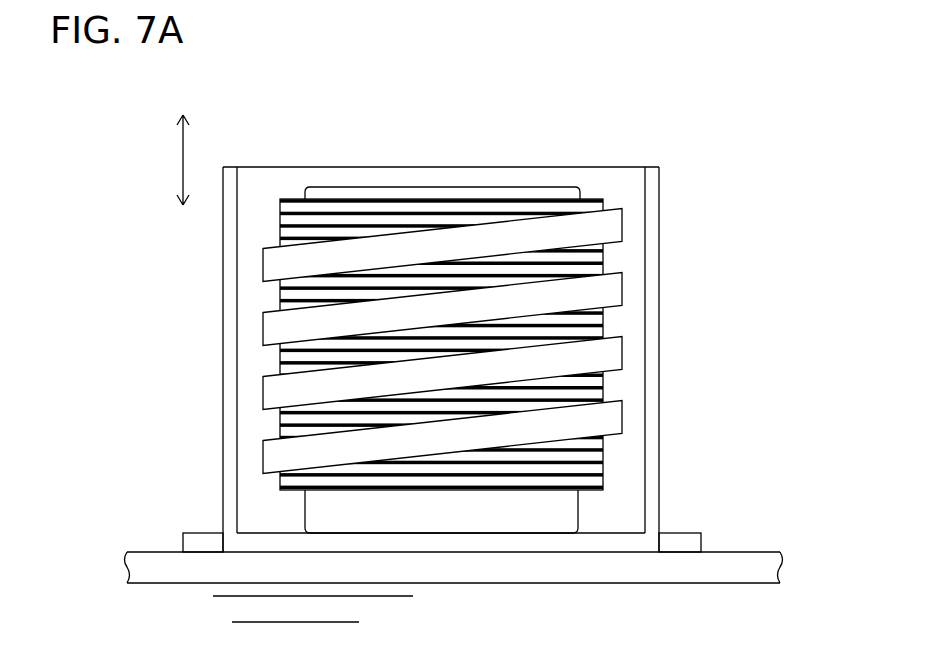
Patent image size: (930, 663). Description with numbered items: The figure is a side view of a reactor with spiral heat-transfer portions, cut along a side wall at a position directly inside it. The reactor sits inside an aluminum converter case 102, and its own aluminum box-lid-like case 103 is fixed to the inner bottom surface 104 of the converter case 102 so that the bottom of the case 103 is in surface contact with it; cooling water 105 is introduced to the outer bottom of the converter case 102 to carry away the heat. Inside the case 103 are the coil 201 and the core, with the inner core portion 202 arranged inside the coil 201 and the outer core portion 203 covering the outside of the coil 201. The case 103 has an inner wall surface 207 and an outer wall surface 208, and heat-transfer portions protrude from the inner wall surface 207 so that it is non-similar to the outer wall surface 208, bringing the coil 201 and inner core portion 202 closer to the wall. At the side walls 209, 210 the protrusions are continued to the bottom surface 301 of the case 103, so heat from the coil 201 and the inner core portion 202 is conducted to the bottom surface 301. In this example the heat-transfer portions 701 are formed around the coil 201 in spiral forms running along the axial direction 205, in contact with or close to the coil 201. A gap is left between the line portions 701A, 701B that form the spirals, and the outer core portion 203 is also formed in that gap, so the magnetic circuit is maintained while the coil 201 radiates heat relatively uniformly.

The converter case 102 is at (147, 557).
The case 103 is at (666, 326).
The inner bottom surface 104 is at (735, 551).
The cooling water 105 is at (553, 636).
The coil 201 is at (558, 205).
The inner core portion 202 is at (438, 188).
The outer core portion 203 is at (540, 177).
The axial direction 205 is at (183, 158).
The inner wall surface 207 is at (238, 181).
The outer wall surface 208 is at (223, 245).
The side wall 209 is at (228, 297).
The side wall 210 is at (655, 398).
The bottom surface 301 is at (608, 540).
The heat-transfer portions 701 is at (613, 218).
The line portion 701A is at (273, 333).
The line portion 701B is at (274, 395).